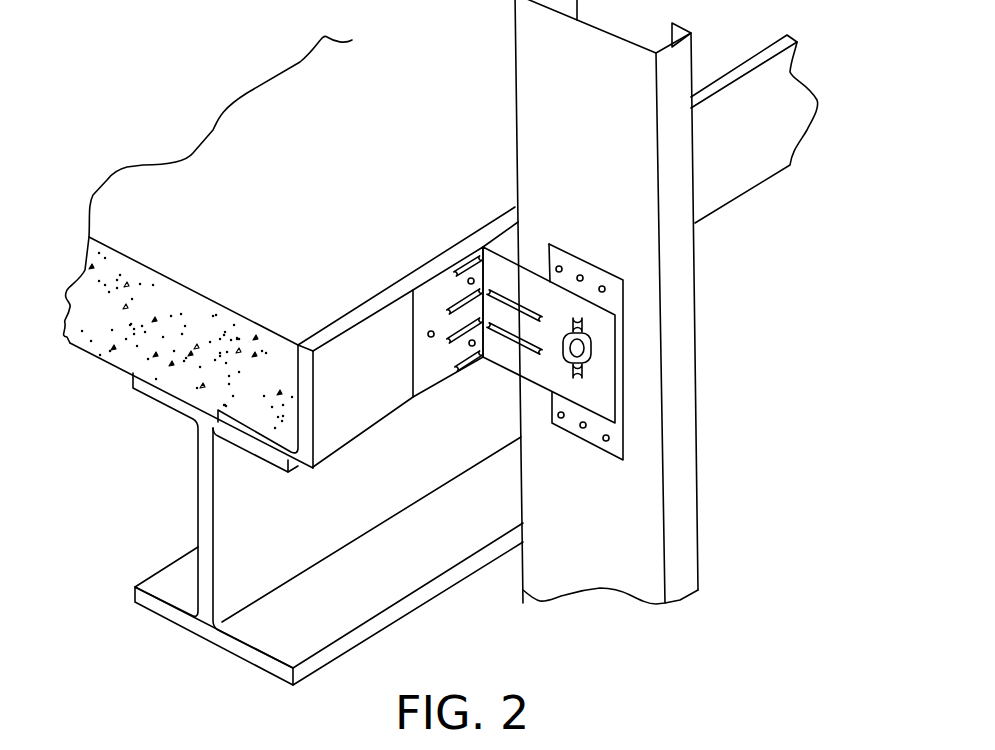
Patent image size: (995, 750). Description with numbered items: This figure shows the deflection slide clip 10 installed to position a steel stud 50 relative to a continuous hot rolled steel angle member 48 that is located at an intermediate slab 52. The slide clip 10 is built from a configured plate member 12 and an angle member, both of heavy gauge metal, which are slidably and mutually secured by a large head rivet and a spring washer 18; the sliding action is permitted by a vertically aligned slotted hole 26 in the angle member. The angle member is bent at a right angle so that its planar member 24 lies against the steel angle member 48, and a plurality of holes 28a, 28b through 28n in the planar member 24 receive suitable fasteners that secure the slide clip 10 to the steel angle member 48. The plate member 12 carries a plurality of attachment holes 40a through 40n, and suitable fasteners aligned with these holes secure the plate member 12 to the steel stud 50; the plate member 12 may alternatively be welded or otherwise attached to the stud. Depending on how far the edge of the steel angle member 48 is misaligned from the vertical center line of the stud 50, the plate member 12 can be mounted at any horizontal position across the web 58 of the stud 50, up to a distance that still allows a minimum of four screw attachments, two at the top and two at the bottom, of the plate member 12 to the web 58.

The deflection slide clip 10 is at (555, 330).
The plate member 12 is at (578, 356).
The spring washer 18 is at (592, 347).
The planar member 24 is at (440, 377).
The slotted hole 26 is at (584, 373).
The hole 28a is at (469, 279).
The hole 28b is at (428, 334).
The hole 28n is at (473, 346).
The attachment hole 40a is at (556, 267).
The attachment hole 40n is at (608, 443).
The hot rolled steel angle member 48 is at (348, 414).
The steel stud 50 is at (634, 302).
The intermediate slab 52 is at (87, 333).
The web 58 is at (602, 104).